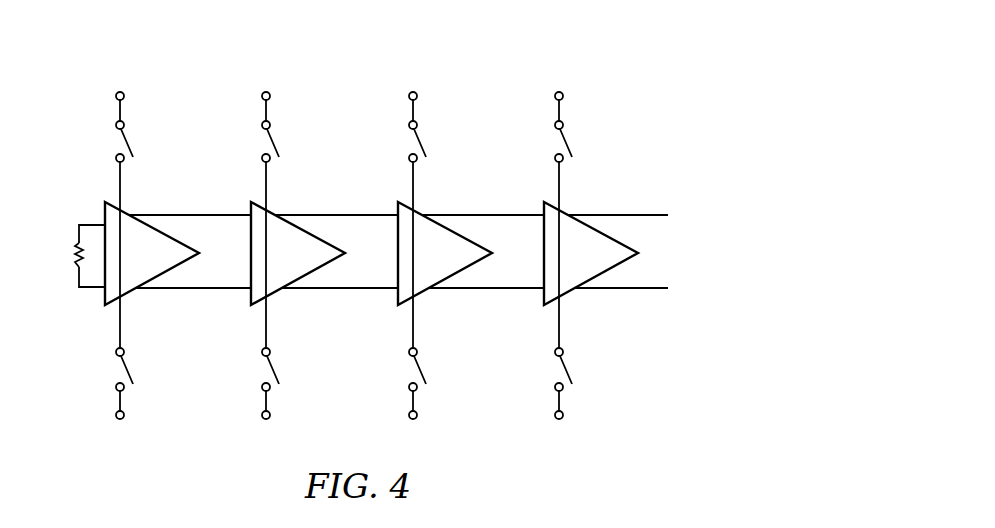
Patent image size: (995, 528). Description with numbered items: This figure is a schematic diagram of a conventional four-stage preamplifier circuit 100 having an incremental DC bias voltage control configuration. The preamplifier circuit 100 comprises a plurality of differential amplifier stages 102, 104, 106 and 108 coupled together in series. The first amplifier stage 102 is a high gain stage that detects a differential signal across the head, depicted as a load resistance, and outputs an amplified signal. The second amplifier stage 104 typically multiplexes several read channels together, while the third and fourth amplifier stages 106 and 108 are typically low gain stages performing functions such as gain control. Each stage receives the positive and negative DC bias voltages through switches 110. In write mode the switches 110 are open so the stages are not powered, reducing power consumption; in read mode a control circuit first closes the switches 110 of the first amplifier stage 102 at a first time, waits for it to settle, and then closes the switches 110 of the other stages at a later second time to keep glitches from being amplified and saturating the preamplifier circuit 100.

The preamplifier circuit 100 is at (485, 77).
The first amplifier stage 102 is at (104, 212).
The second amplifier stage 104 is at (250, 211).
The third amplifier stage 106 is at (397, 210).
The fourth amplifier stage 108 is at (543, 209).
The switches 110 is at (128, 138).